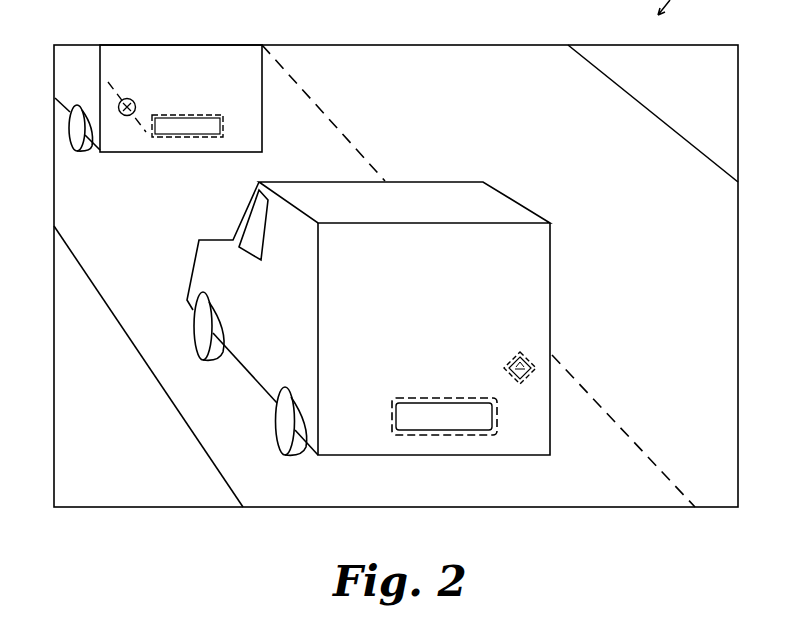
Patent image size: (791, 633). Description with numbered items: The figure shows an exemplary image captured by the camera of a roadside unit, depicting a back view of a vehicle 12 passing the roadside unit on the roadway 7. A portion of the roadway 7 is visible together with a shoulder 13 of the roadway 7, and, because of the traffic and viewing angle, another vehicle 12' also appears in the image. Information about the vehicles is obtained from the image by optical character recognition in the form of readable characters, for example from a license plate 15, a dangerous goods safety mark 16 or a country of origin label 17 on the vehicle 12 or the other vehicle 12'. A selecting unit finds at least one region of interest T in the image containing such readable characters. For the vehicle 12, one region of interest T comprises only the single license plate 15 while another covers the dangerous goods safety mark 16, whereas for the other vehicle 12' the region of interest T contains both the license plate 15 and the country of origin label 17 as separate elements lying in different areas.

The roadway 7 is at (139, 250).
The vehicle 12 is at (375, 314).
The other vehicle 12' is at (183, 98).
The shoulder 13 is at (711, 95).
The license plate 15 is at (404, 410).
The dangerous goods safety mark 16 is at (513, 357).
The country of origin label 17 is at (130, 99).
The region of interest T is at (503, 370).